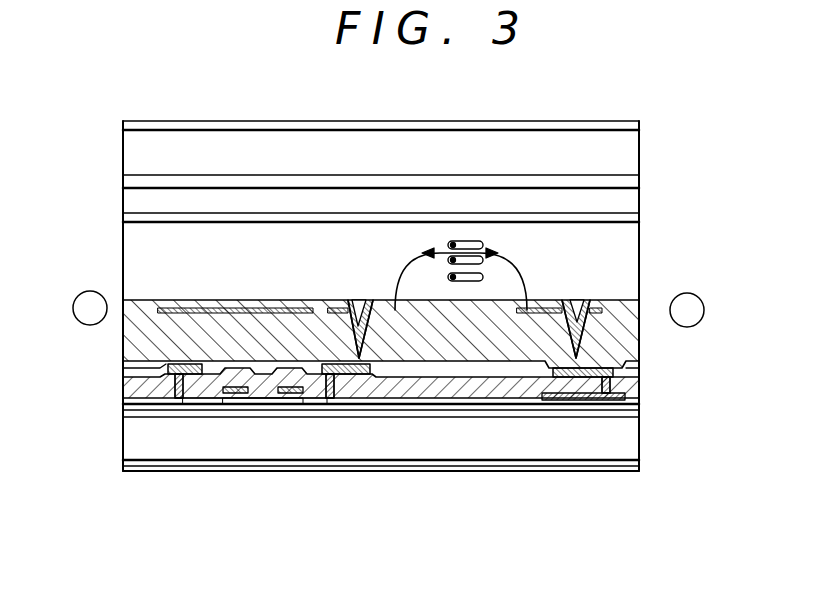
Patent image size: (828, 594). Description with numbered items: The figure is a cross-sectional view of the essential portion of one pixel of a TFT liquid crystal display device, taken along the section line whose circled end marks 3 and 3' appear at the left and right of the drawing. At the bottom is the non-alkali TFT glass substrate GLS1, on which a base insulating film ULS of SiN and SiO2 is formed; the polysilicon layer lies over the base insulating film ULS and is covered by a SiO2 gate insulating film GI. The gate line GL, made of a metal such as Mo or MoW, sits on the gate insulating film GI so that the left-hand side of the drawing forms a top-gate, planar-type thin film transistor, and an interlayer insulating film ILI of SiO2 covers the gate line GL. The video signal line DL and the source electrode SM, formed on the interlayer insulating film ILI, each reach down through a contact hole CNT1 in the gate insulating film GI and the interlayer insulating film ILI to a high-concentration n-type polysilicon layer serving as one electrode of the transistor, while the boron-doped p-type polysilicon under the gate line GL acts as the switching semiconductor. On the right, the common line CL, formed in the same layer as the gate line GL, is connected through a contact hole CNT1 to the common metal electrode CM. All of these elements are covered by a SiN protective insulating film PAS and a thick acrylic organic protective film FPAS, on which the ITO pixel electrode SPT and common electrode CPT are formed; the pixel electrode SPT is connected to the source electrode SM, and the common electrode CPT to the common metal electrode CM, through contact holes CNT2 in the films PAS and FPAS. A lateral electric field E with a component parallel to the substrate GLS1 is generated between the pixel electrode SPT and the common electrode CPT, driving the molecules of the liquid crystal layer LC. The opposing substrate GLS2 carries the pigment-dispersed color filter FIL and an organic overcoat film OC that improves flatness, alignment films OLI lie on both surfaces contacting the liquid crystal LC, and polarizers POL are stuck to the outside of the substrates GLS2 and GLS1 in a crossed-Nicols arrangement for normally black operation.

The polarizer POL is at (641, 125).
The substrate GLS2 is at (641, 150).
The color filter FIL is at (641, 181).
The overcoat film OC is at (641, 208).
The alignment film OLI is at (641, 223).
The liquid crystal layer LC is at (448, 243).
The lateral electric field E is at (461, 268).
The common electrode CPT is at (267, 306).
The pixel electrode SPT is at (328, 306).
The contact hole CNT2 is at (358, 300).
The organic protective film FPAS is at (632, 340).
The protective insulating film PAS is at (637, 373).
The interlayer insulating film ILI is at (637, 392).
The video signal line DL is at (168, 371).
The source electrode SM is at (346, 378).
The common metal electrode CM is at (563, 378).
The common line CL is at (580, 399).
The gate line GL is at (288, 385).
The gate insulating film GI is at (637, 408).
The base insulating film ULS is at (635, 453).
The TFT glass substrate GLS1 is at (637, 466).
The first contact hole CNT1 is at (177, 424).
The section line end 3 is at (90, 308).
The section line end 3' is at (687, 310).